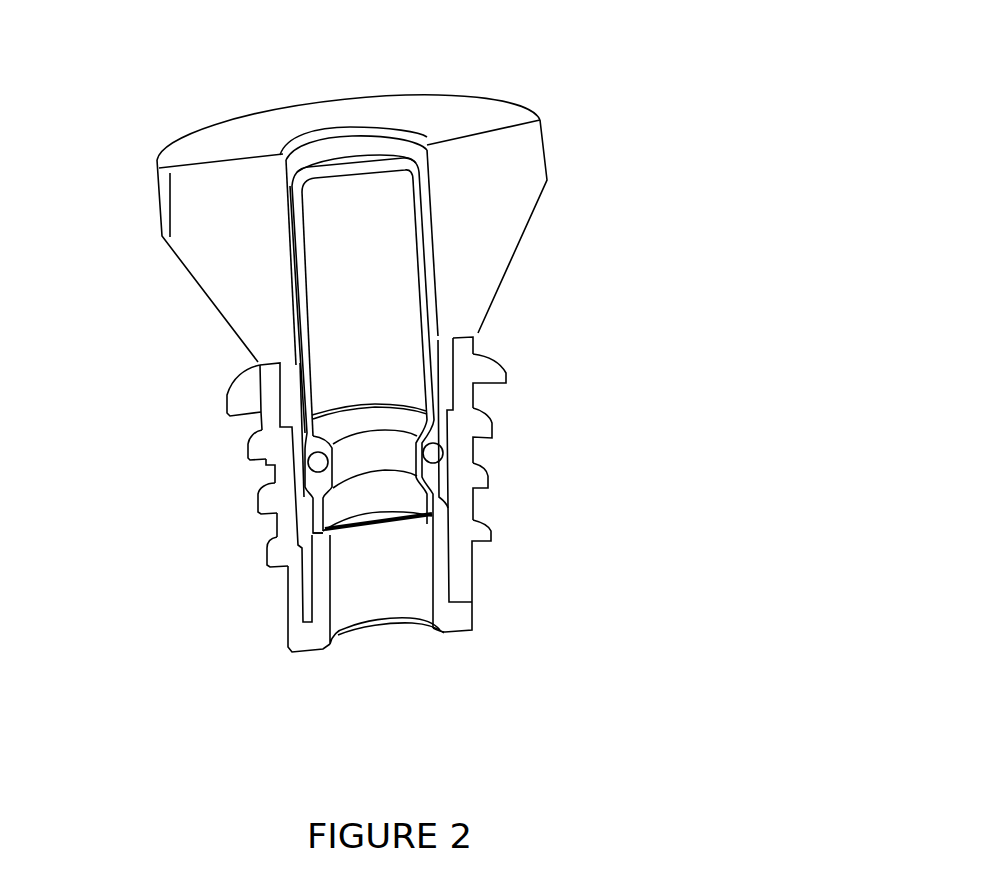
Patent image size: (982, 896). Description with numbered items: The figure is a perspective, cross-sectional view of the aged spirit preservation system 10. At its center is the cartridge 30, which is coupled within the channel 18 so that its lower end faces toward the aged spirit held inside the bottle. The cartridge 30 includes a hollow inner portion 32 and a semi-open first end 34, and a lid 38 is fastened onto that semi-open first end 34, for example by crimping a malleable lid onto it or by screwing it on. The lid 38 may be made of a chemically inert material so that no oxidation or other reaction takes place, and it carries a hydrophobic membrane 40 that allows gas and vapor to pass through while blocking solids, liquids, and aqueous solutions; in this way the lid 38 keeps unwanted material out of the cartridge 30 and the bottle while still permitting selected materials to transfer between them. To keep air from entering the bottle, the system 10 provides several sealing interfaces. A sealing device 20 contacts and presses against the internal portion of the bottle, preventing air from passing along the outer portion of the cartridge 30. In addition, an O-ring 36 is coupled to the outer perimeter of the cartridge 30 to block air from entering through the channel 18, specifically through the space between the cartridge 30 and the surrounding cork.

The aged spirit preservation system 10 is at (622, 140).
The channel 18 is at (310, 155).
The sealing device 20 is at (505, 373).
The cartridge 30 is at (335, 168).
The hollow inner portion 32 is at (383, 212).
The semi-open first end 34 is at (330, 509).
The O-ring 36 is at (430, 460).
The lid 38 is at (438, 502).
The hydrophobic membrane 40 is at (362, 519).